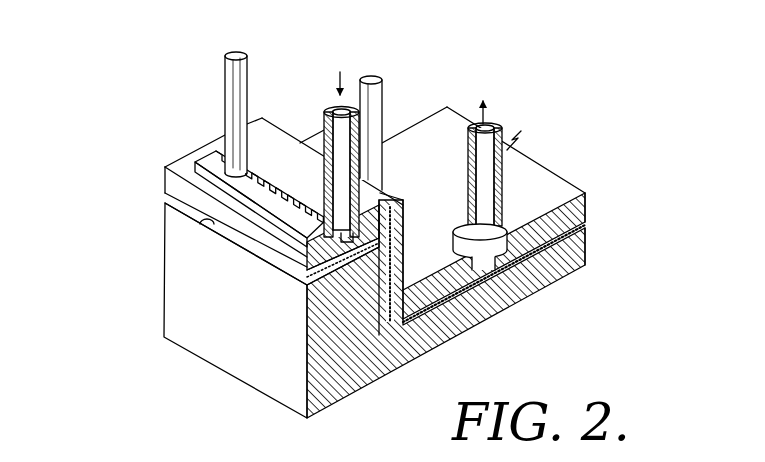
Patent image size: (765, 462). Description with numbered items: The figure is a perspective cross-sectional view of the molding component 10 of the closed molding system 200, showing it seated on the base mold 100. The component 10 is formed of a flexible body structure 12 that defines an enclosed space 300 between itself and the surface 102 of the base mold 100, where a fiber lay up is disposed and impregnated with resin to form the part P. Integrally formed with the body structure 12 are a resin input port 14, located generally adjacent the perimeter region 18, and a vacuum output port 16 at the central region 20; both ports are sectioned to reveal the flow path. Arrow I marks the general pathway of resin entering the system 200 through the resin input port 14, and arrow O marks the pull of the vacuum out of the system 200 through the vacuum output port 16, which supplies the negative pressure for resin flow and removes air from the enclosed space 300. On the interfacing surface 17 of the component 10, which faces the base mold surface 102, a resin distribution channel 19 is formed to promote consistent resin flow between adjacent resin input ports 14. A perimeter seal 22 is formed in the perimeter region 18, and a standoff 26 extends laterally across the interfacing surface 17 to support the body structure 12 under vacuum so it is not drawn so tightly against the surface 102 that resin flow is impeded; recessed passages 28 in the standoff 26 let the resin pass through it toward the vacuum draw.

The molding component 10 is at (573, 157).
The flexible body structure 12 is at (429, 120).
The resin input port 14 is at (324, 115).
The vacuum output port 16 is at (505, 133).
The interfacing surface 17 is at (437, 301).
The perimeter region 18 is at (166, 154).
The resin distribution channel 19 is at (262, 215).
The central region 20 is at (447, 190).
The perimeter seal 22 is at (306, 284).
The standoff 26 is at (262, 168).
The recessed passages 28 is at (274, 178).
The base mold 100 is at (233, 374).
The base mold surface 102 is at (199, 223).
The system 200 is at (117, 237).
The enclosed space 300 is at (640, 184).
The part P is at (586, 223).
The arrow I is at (348, 69).
The arrow O is at (496, 97).